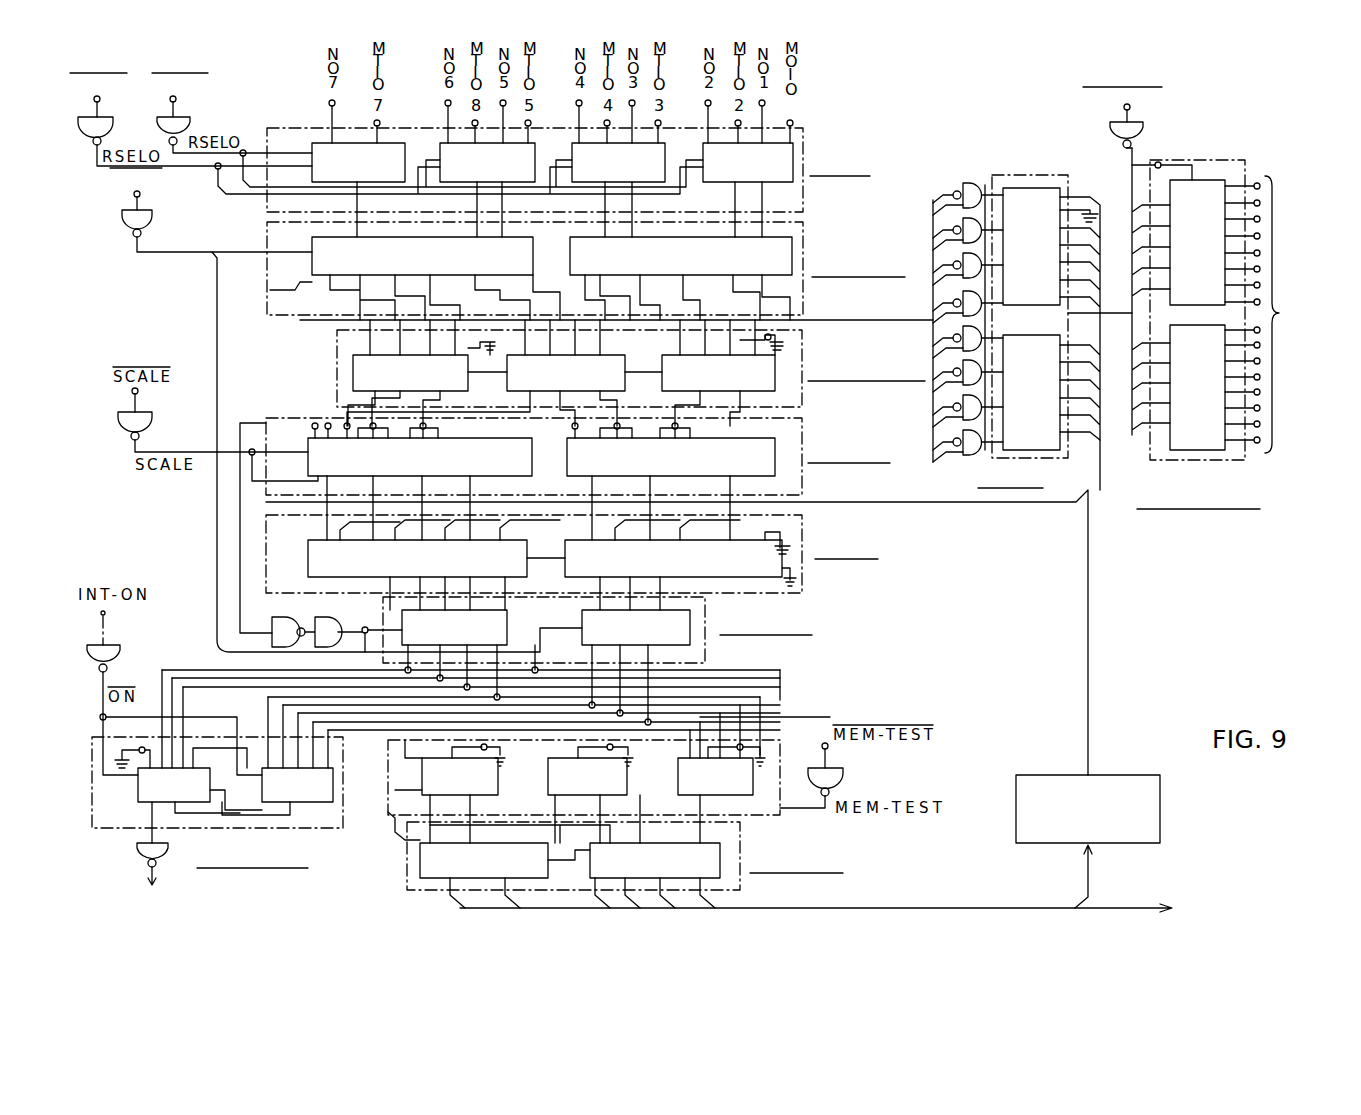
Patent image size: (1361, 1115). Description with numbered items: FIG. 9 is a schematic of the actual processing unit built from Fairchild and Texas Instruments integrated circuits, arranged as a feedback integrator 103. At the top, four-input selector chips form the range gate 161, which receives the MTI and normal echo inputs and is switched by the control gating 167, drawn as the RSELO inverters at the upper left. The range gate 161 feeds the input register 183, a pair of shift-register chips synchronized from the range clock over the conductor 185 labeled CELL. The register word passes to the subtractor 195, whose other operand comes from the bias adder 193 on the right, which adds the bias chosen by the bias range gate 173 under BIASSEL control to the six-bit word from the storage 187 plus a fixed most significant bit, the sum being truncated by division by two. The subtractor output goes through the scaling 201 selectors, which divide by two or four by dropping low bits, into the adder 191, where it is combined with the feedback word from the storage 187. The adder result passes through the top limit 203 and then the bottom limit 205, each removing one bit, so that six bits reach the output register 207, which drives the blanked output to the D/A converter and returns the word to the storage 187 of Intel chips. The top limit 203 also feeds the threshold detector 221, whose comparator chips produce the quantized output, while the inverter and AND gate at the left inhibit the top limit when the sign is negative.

The feedback integrator 103 is at (967, 897).
The range gate 161 is at (803, 200).
The control gating 167 is at (152, 118).
The bias range gate 173 is at (1150, 448).
The input register 183 is at (803, 301).
The conductor 185 is at (170, 252).
The storage 187 is at (1160, 792).
The adder 191 is at (803, 579).
The bias adder 193 is at (992, 448).
The subtractor 195 is at (803, 399).
The scaling 201 is at (803, 488).
The top limit 203 is at (705, 658).
The bottom limit 205 is at (785, 730).
The output register 207 is at (740, 830).
The threshold detector 221 is at (106, 835).